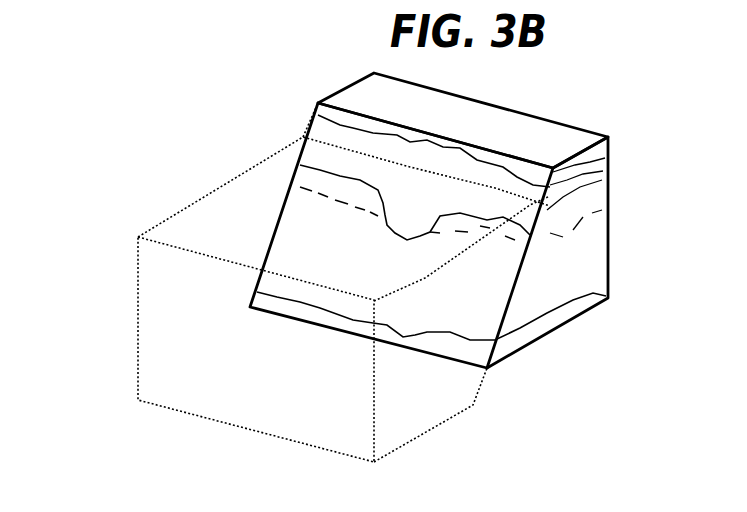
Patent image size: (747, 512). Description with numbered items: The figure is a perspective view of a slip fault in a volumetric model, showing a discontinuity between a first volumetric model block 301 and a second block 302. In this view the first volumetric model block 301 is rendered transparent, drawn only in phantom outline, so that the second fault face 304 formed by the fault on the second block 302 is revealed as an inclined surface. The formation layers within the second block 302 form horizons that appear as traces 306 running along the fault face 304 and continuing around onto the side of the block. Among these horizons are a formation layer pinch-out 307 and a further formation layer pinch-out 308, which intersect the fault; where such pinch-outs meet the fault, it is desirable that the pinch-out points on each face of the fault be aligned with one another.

The first volumetric model block 301 is at (410, 442).
The second block 302 is at (606, 302).
The second fault face 304 is at (303, 130).
The traces 306 is at (507, 168).
The formation layer pinch-out 307 is at (378, 222).
The formation layer pinch-out 308 is at (431, 283).